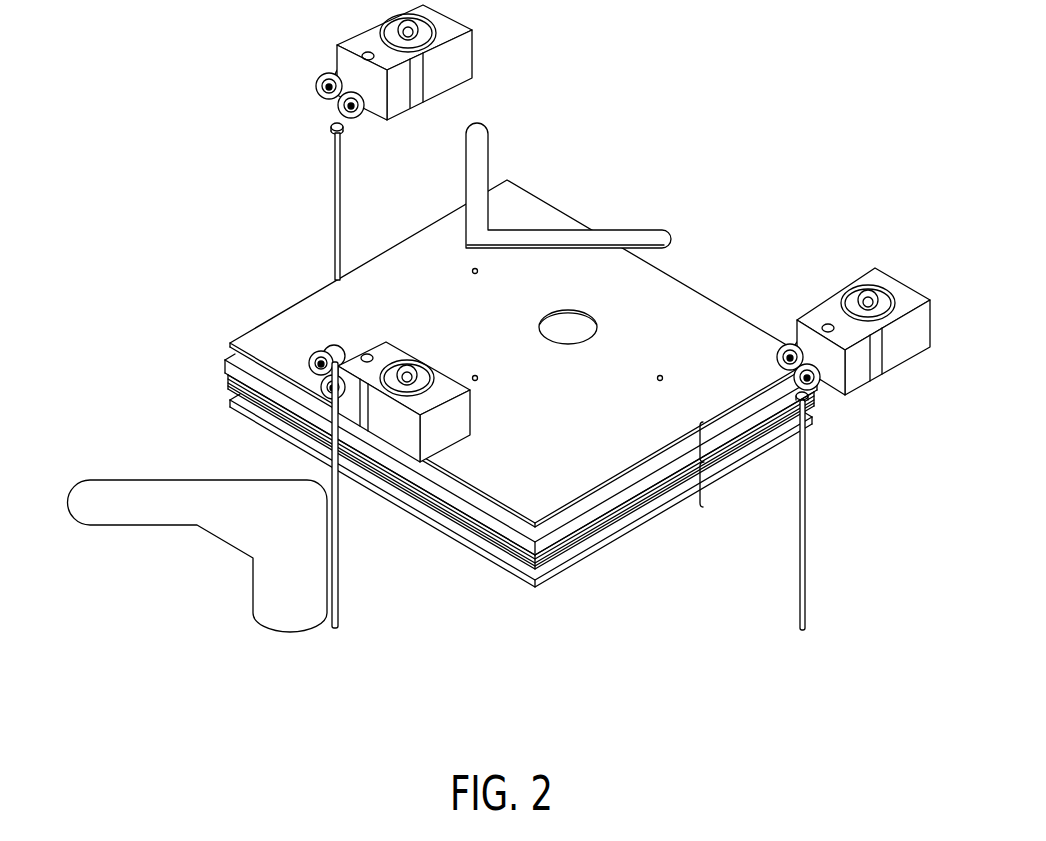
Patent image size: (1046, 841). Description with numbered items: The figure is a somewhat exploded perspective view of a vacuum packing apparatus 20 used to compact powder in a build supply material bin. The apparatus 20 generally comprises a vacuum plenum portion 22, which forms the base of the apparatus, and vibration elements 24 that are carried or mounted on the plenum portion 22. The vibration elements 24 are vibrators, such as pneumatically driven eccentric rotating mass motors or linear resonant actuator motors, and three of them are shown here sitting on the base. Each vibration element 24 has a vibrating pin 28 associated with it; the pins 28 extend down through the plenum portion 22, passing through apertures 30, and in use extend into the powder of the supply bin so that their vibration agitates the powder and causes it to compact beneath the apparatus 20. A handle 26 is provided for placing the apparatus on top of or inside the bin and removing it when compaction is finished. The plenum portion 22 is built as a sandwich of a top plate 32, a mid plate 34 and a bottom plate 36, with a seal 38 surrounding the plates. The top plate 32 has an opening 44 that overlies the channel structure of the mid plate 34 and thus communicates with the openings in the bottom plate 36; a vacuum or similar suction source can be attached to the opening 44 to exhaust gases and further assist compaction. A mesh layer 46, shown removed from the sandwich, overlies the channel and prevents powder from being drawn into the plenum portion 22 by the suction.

The apparatus 20 is at (767, 245).
The vacuum plenum portion 22 is at (491, 414).
The vibration elements 24 is at (465, 60).
The handle 26 is at (478, 147).
The vibrating pins 28 is at (333, 208).
The apertures 30 is at (470, 271).
The top plate 32 is at (230, 346).
The mid plate 34 is at (547, 560).
The bottom plate 36 is at (533, 585).
The seal 38 is at (590, 533).
The opening 44 is at (598, 318).
The mesh layer 46 is at (297, 632).